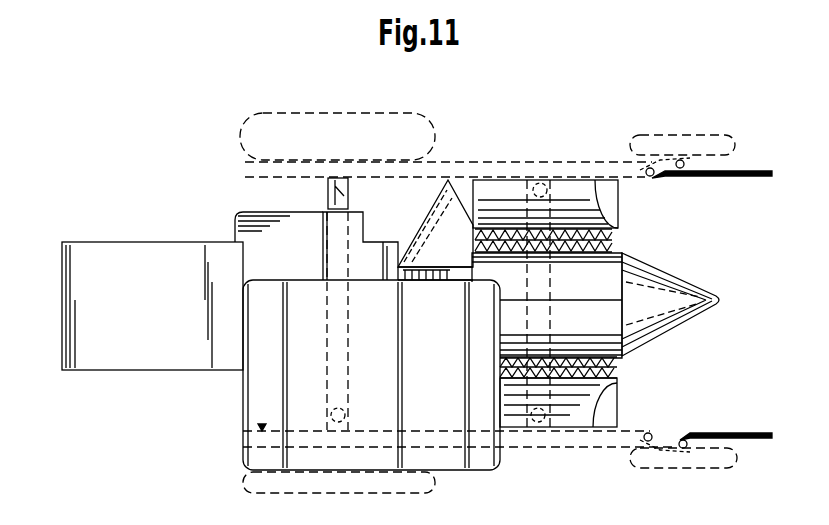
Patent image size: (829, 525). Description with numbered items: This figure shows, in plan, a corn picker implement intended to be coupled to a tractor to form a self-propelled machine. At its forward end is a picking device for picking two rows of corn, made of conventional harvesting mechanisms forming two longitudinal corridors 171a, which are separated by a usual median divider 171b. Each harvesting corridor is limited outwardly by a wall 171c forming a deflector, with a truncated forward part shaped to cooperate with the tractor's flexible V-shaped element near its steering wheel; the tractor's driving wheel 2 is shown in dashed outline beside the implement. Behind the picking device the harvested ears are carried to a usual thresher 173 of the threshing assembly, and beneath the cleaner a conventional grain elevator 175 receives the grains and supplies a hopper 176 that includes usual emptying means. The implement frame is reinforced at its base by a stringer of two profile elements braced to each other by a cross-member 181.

The driving wheel 2 is at (253, 119).
The longitudinal corridor 171a is at (624, 203).
The median divider 171b is at (700, 298).
The wall 171c is at (495, 188).
The thresher 173 is at (136, 380).
The grain elevator 175 is at (236, 221).
The hopper 176 is at (450, 456).
The cross-member 181 is at (328, 200).